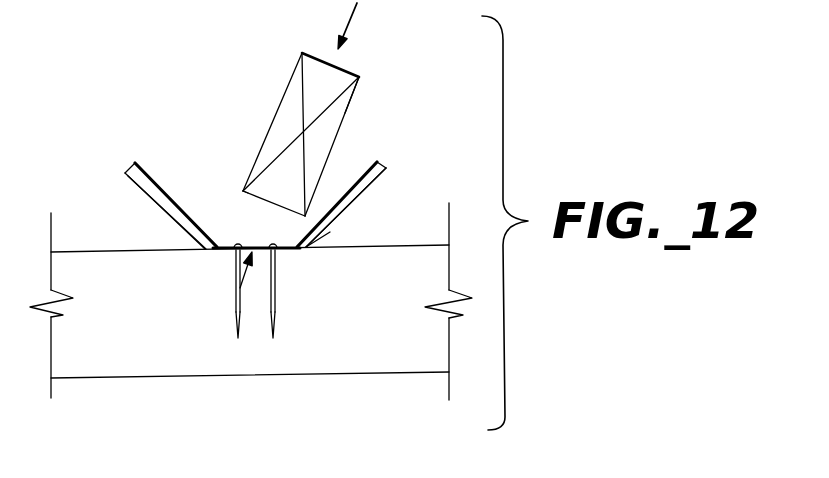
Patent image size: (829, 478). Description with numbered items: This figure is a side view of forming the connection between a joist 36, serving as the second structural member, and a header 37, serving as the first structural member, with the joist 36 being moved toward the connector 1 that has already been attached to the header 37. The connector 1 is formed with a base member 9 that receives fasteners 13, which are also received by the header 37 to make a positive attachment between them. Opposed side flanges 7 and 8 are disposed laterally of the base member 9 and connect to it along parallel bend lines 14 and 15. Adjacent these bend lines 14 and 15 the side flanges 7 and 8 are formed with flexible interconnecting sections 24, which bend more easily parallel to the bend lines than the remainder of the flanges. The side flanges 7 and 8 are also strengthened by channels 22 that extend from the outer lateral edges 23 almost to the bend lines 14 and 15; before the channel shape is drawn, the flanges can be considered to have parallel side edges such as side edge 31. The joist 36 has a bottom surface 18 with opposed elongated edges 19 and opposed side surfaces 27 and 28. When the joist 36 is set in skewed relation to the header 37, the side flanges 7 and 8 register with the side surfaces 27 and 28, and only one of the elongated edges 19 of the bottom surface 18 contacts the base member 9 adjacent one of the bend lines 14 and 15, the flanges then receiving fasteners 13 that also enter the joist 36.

The connector 1 is at (396, 148).
The side flange 7 is at (150, 143).
The side flange 8 is at (372, 138).
The base member 9 is at (237, 292).
The fasteners 13 is at (243, 312).
The bend line 14 is at (225, 252).
The bend line 15 is at (293, 249).
The bottom surface 18 is at (264, 200).
The elongated edges 19 is at (243, 191).
The channels 22 is at (140, 194).
The lateral edges 23 is at (127, 170).
The flexible interconnecting sections 24 is at (219, 240).
The side surface 27 is at (292, 82).
The side surface 28 is at (356, 93).
The side edge 31 is at (148, 173).
The joist 36 is at (372, 62).
The header 37 is at (338, 382).